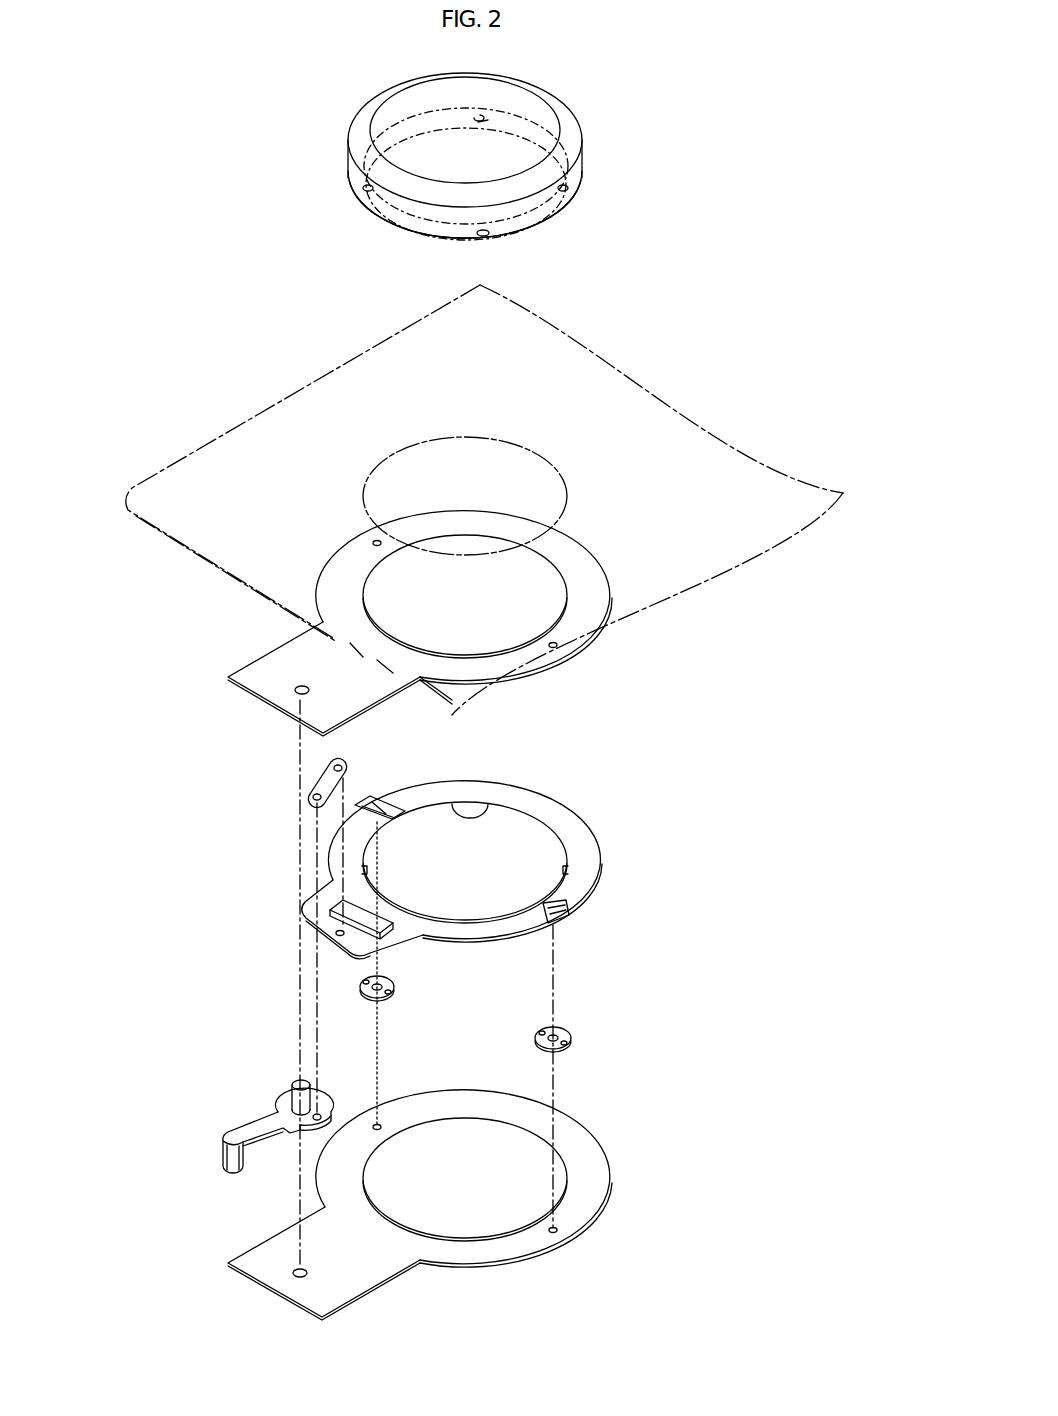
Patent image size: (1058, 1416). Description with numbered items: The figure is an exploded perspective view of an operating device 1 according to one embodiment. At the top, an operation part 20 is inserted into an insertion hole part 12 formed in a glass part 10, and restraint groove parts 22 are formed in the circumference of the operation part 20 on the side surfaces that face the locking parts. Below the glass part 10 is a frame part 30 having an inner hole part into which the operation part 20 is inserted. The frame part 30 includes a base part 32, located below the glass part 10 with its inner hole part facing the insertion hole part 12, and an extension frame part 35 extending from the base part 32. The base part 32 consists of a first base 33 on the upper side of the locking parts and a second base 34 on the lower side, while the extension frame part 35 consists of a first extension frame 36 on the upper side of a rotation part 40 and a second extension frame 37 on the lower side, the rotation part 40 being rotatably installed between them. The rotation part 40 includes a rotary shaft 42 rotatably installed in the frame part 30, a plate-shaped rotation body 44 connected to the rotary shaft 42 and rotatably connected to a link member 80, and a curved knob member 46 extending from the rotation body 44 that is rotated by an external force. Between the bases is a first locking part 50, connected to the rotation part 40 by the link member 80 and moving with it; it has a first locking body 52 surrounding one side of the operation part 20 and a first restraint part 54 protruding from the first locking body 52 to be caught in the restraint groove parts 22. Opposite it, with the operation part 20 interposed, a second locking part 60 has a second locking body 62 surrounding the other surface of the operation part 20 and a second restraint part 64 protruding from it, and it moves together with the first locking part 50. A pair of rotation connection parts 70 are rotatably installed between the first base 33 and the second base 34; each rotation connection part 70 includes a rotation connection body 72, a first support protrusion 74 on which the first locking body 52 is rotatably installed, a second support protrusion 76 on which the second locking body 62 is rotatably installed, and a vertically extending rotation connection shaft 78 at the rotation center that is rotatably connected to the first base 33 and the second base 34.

The operating device 1 is at (191, 271).
The glass part 10 is at (643, 455).
The insertion hole part 12 is at (479, 462).
The operation part 20 is at (603, 98).
The restraint groove parts 22 is at (478, 237).
The frame part 30 is at (196, 697).
The base part 32 is at (627, 1170).
The first base 33 is at (590, 588).
The second base 34 is at (590, 1210).
The extension frame part 35 is at (235, 662).
The first extension frame 36 is at (263, 680).
The second extension frame 37 is at (240, 1265).
The rotation part 40 is at (195, 1148).
The rotary shaft 42 is at (298, 1081).
The rotation body 44 is at (282, 1105).
The knob member 46 is at (232, 1170).
The first locking part 50 is at (453, 976).
The first locking body 52 is at (461, 955).
The first restraint part 54 is at (476, 915).
The second locking part 60 is at (590, 805).
The second locking body 62 is at (512, 800).
The second restraint part 64 is at (468, 810).
The rotation connection part 70 is at (580, 1025).
The rotation connection body 72 is at (558, 1052).
The first support protrusion 74 is at (540, 1033).
The second support protrusion 76 is at (575, 1044).
The rotation connection shaft 78 is at (556, 1032).
The link member 80 is at (327, 782).